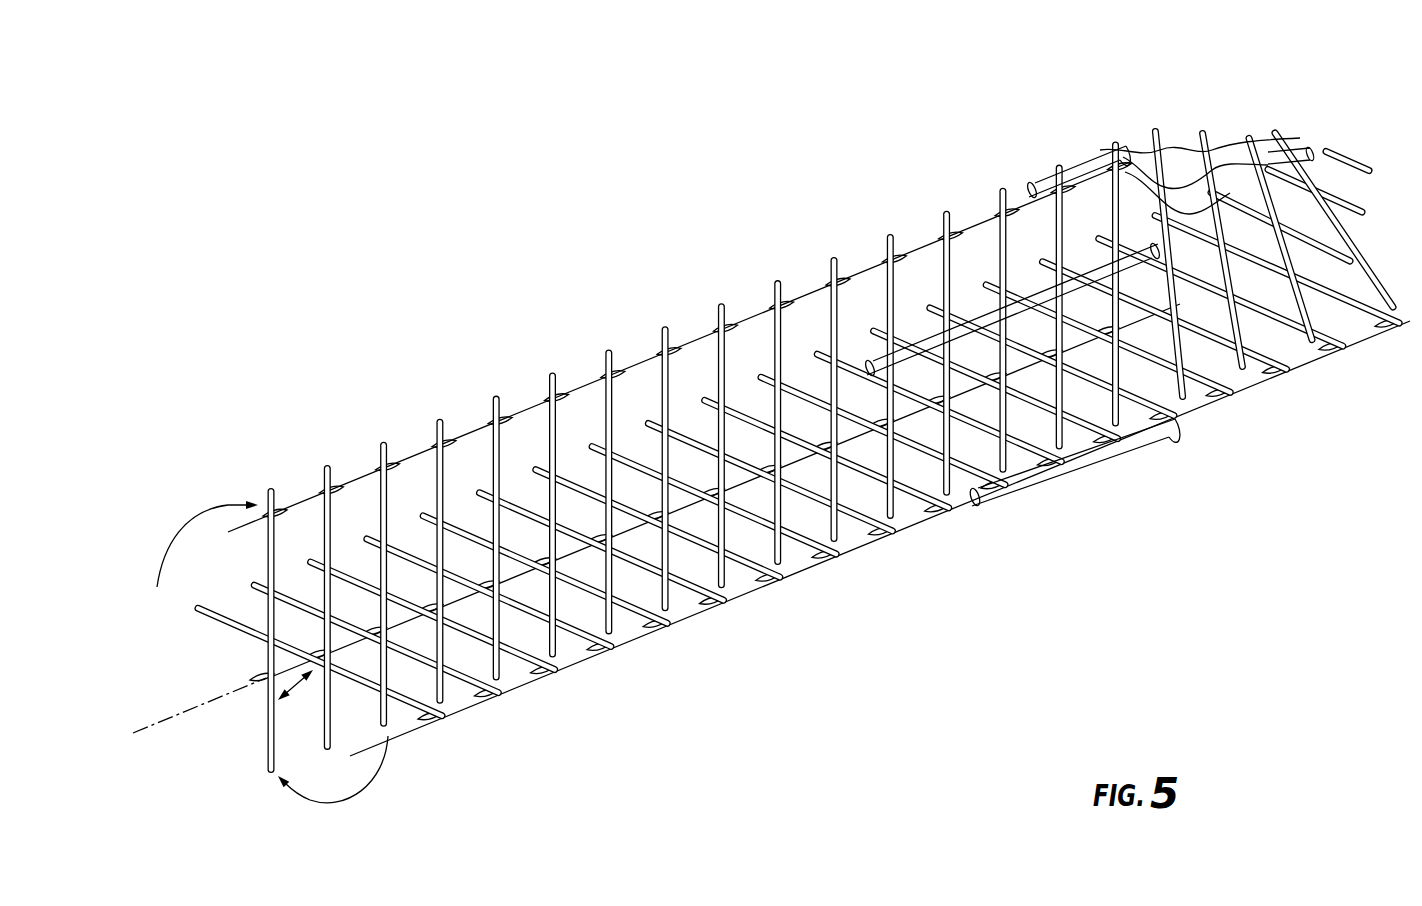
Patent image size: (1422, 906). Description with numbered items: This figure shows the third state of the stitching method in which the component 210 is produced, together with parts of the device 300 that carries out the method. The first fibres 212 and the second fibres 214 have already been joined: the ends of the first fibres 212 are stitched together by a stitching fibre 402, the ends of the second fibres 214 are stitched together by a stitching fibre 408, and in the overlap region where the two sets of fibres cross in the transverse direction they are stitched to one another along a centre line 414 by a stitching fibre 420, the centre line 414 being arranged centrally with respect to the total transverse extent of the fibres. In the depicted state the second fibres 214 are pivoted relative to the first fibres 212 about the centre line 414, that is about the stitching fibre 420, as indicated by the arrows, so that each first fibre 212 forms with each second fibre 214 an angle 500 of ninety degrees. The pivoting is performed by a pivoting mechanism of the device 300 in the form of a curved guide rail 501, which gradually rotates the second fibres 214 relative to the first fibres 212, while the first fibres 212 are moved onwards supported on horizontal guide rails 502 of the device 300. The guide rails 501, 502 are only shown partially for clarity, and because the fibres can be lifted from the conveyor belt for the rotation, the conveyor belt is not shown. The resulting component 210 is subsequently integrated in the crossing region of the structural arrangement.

The device 300 is at (914, 74).
The component 210 is at (552, 318).
The first fibres 212 is at (213, 620).
The second fibres 214 is at (267, 735).
The stitching fibre 402 is at (470, 430).
The stitching fibre 408 is at (460, 710).
The centre line 414 is at (148, 722).
The stitching fibre 420 is at (577, 547).
The angle 500 is at (312, 690).
The curved guide rail 501 is at (1096, 160).
The horizontal guide rails 502 is at (923, 343).